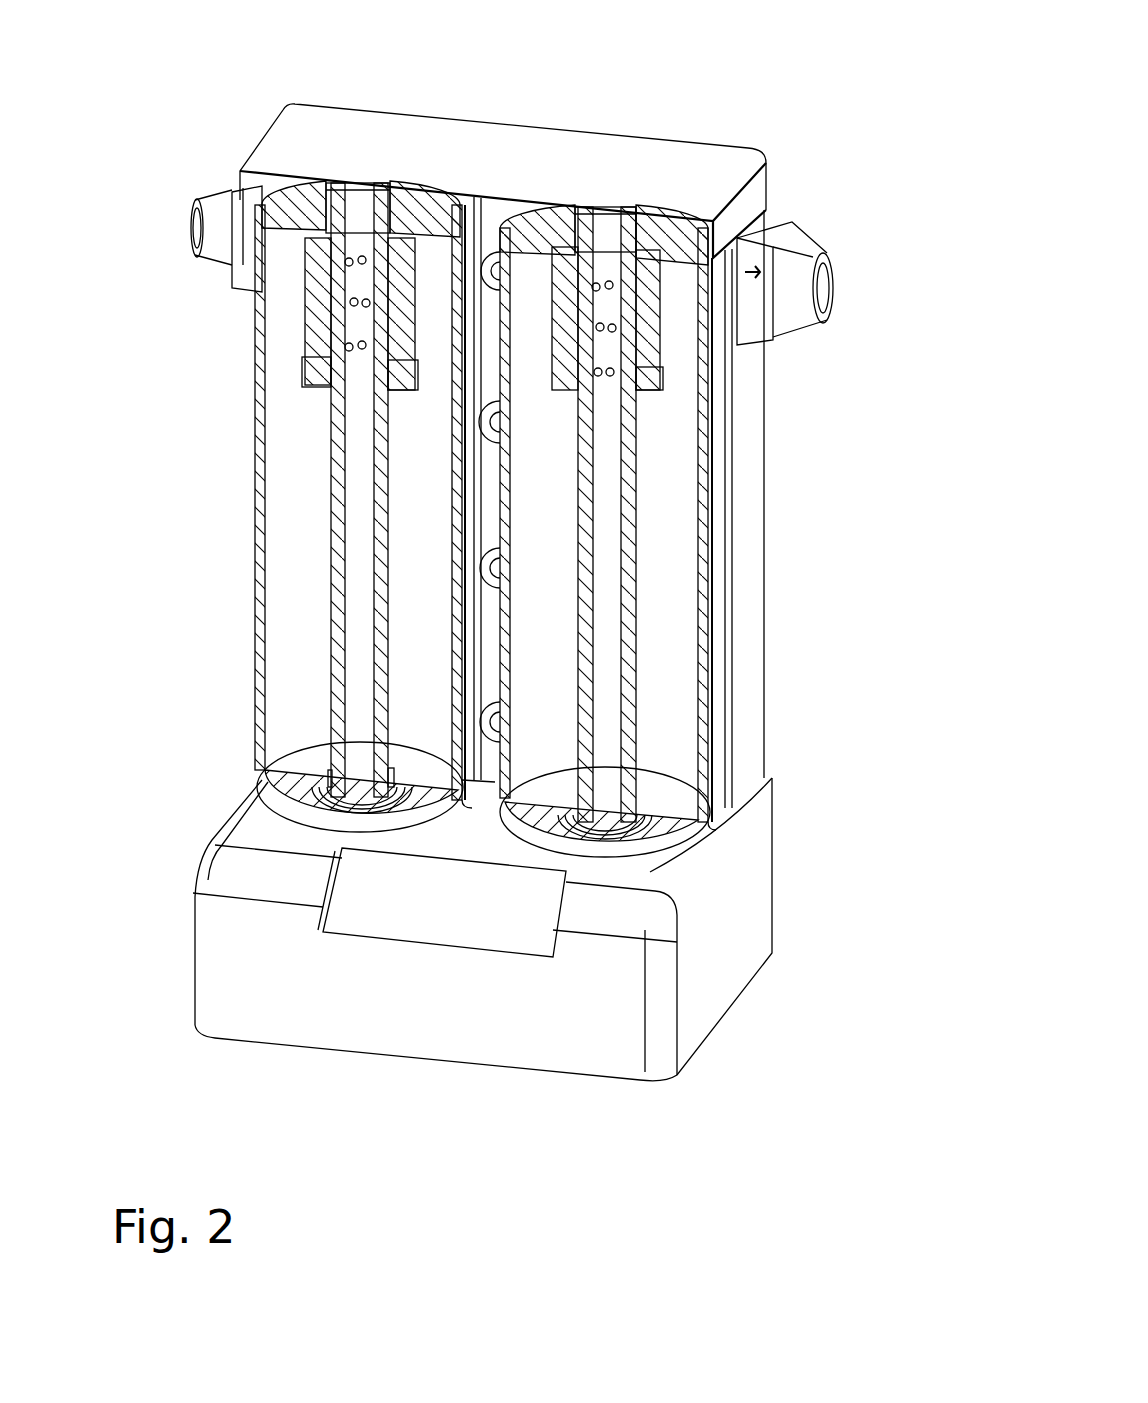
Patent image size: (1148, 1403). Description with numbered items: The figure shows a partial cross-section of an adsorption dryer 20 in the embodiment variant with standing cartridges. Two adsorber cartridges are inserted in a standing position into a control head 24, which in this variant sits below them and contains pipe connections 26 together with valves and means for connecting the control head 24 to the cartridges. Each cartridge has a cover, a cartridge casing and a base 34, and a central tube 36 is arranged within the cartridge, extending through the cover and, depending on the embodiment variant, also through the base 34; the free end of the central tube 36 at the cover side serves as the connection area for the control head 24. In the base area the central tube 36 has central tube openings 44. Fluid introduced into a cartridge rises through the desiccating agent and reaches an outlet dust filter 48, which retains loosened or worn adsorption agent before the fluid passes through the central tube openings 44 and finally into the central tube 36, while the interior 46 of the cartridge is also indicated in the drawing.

The adsorption dryer 20 is at (803, 137).
The control head 24 is at (750, 943).
The pipe connections 26 is at (200, 237).
The base 34 is at (303, 218).
The central tube 36 is at (360, 613).
The central tube openings 44 is at (350, 303).
The interior space 46 is at (287, 555).
The outlet dust filter 48 is at (393, 273).